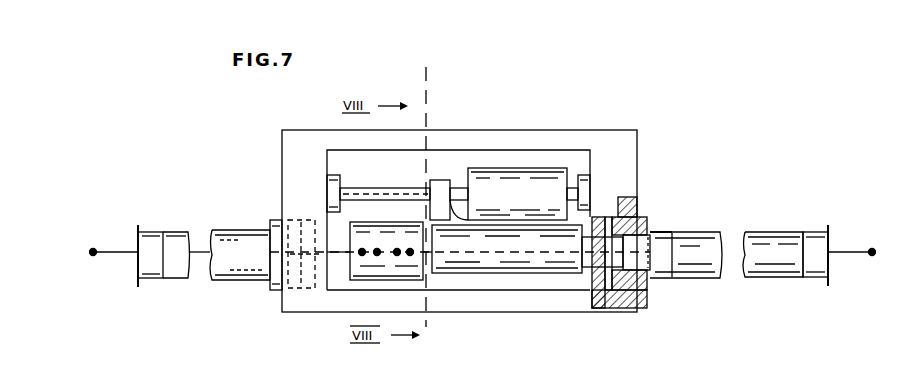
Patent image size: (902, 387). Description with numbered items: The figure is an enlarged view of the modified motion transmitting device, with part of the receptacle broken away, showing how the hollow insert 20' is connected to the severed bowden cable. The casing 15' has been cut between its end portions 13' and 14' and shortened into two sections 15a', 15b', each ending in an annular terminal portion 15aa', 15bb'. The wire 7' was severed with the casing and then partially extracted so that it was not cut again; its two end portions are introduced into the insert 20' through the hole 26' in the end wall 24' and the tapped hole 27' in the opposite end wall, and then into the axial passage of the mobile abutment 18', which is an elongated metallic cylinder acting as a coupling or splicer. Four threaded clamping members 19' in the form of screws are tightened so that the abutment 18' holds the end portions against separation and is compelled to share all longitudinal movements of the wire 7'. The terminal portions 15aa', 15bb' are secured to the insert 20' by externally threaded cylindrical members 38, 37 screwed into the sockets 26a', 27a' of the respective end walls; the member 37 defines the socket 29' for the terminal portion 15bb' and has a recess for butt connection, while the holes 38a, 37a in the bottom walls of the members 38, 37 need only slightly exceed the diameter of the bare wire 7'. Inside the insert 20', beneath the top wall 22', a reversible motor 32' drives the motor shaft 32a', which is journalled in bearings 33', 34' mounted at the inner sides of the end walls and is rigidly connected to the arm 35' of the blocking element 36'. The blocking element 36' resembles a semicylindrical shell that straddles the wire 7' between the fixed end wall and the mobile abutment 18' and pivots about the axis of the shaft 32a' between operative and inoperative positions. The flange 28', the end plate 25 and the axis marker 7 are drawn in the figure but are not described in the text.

The wire 7' is at (141, 245).
The end portion of casing 13' is at (162, 274).
The casing section 15a' is at (219, 279).
The annular terminal portion 15aa' is at (245, 186).
The flange 28' is at (253, 242).
The end wall 24' is at (439, 218).
The bearing 33' is at (493, 198).
The socket 26a' is at (272, 184).
The externally threaded cylindrical member 38 is at (299, 238).
The hole 26' is at (293, 289).
The bearing 34' is at (280, 143).
The hole 38a is at (345, 236).
The motor shaft 32a' is at (461, 141).
The top wall 22' is at (472, 164).
The arm of blocking element 35' is at (517, 147).
The reversible motor 32' is at (594, 145).
The mobile abutment 18' is at (403, 286).
The threaded clamping members 19' is at (386, 305).
The blocking element 36' is at (527, 293).
The tapped bore 27' is at (639, 234).
The hole 37a is at (660, 213).
The externally threaded cylindrical member 37 is at (643, 292).
The socket 27a' is at (644, 322).
The socket 29' is at (660, 233).
The end plate 25 is at (641, 176).
The hollow insert 20' is at (691, 104).
The casing 15' is at (695, 270).
The annular terminal portion 15bb' is at (680, 276).
The casing section 15b' is at (762, 231).
The end portion of casing 14' is at (831, 241).
The axis end 7 is at (815, 217).